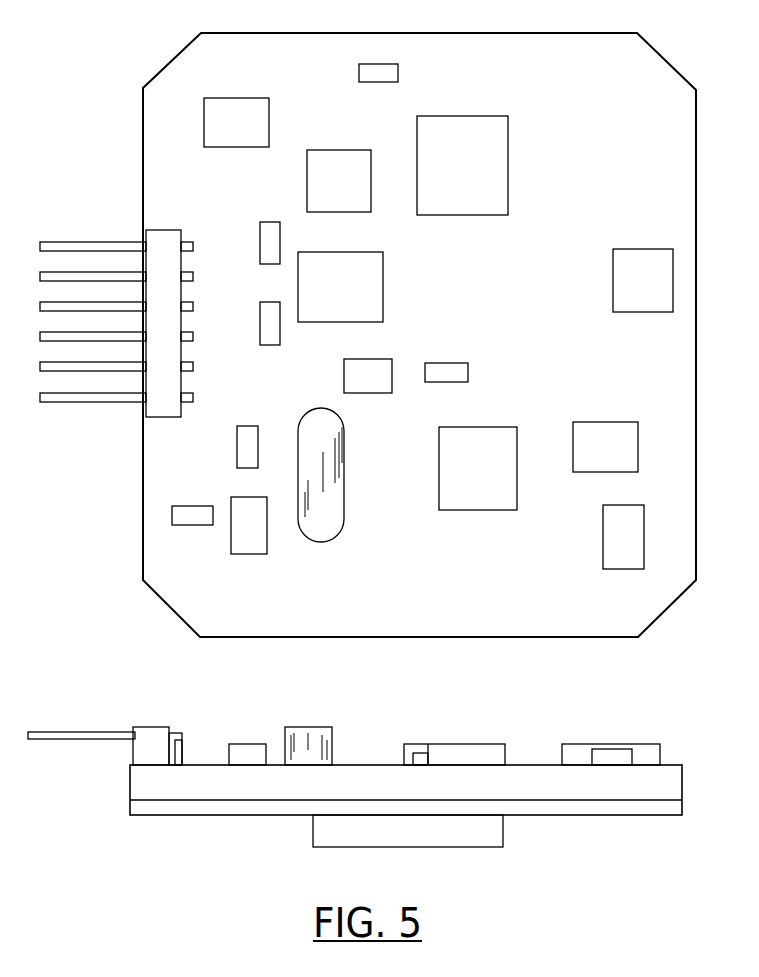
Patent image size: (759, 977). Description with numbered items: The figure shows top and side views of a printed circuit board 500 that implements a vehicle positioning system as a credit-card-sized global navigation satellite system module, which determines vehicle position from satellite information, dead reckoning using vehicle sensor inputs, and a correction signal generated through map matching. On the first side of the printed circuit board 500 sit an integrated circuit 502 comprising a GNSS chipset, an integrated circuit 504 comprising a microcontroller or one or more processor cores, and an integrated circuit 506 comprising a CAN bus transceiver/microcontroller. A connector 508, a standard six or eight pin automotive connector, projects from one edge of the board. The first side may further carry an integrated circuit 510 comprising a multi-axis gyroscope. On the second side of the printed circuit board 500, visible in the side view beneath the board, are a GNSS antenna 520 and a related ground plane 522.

The printed circuit board 500 is at (274, 32).
The integrated circuit 502 is at (452, 115).
The integrated circuit 504 is at (465, 427).
The integrated circuit 506 is at (248, 554).
The connector 508 is at (169, 229).
The integrated circuit 510 is at (635, 249).
The GNSS antenna 520 is at (487, 847).
The ground plane 522 is at (642, 815).